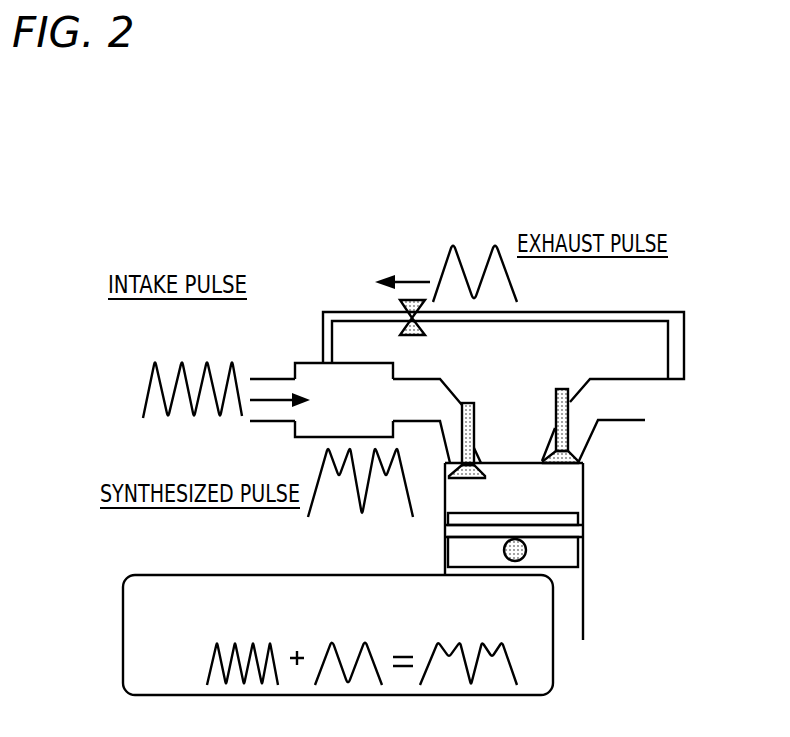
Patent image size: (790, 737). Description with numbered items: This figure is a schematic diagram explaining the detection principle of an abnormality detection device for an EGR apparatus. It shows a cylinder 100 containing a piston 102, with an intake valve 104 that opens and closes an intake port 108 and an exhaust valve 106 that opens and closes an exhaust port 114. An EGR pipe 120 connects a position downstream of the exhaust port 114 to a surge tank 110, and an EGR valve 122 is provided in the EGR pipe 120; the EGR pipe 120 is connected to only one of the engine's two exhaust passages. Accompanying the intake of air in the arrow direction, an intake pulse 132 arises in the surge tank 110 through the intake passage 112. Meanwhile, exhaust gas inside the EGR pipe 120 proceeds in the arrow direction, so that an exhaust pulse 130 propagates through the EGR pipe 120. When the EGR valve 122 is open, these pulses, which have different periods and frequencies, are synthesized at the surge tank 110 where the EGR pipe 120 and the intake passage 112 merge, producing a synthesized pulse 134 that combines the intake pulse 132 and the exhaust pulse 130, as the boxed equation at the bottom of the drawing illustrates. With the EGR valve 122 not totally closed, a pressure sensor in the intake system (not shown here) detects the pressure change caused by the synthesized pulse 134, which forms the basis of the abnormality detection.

The cylinder 100 is at (585, 583).
The piston 102 is at (563, 513).
The intake valve 104 is at (478, 428).
The exhaust valve 106 is at (552, 430).
The intake port 108 is at (423, 379).
The surge tank 110 is at (300, 437).
The intake passage 112 is at (270, 378).
The exhaust port 114 is at (623, 427).
The EGR pipe 120 is at (683, 310).
The EGR valve 122 is at (400, 300).
The exhaust pulse 130 is at (472, 237).
The intake pulse 132 is at (130, 399).
The synthesized pulse 134 is at (338, 522).